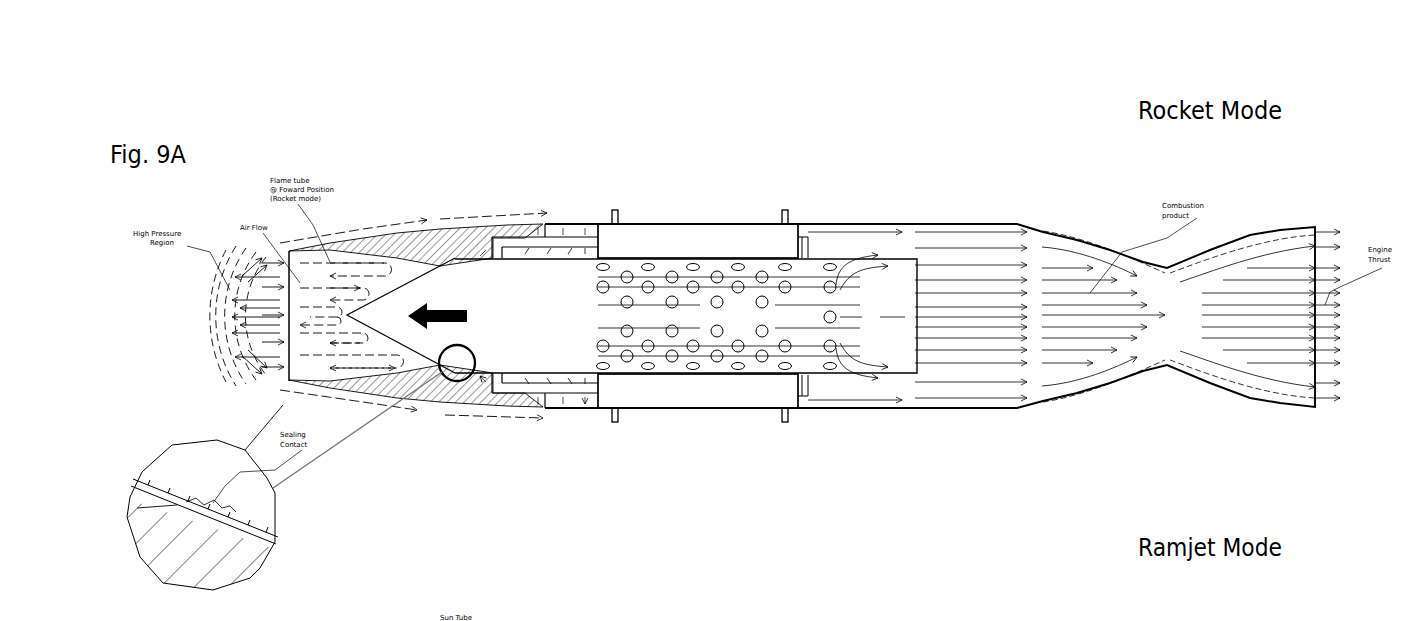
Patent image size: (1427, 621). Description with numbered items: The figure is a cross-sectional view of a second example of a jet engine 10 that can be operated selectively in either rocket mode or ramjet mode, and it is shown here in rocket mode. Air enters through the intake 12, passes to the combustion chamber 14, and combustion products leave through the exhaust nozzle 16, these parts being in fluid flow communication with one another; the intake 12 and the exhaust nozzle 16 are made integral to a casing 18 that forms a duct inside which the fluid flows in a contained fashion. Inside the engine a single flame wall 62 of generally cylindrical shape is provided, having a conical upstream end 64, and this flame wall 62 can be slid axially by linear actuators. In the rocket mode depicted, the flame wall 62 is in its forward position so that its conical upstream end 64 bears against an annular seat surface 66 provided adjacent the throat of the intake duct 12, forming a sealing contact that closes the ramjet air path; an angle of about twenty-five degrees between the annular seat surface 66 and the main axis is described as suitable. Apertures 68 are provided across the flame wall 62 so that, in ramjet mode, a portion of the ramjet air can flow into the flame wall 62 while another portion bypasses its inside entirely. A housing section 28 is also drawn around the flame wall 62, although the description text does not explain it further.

The jet engine 10 is at (253, 140).
The intake 12 is at (400, 273).
The combustion chamber 14 is at (905, 223).
The exhaust nozzle 16 is at (1252, 233).
The casing 18 is at (447, 230).
The housing section 28 is at (683, 227).
The flame wall 62 is at (557, 253).
The conical upstream end 64 is at (423, 358).
The annular seat surface 66 is at (152, 563).
The apertures 68 is at (695, 353).